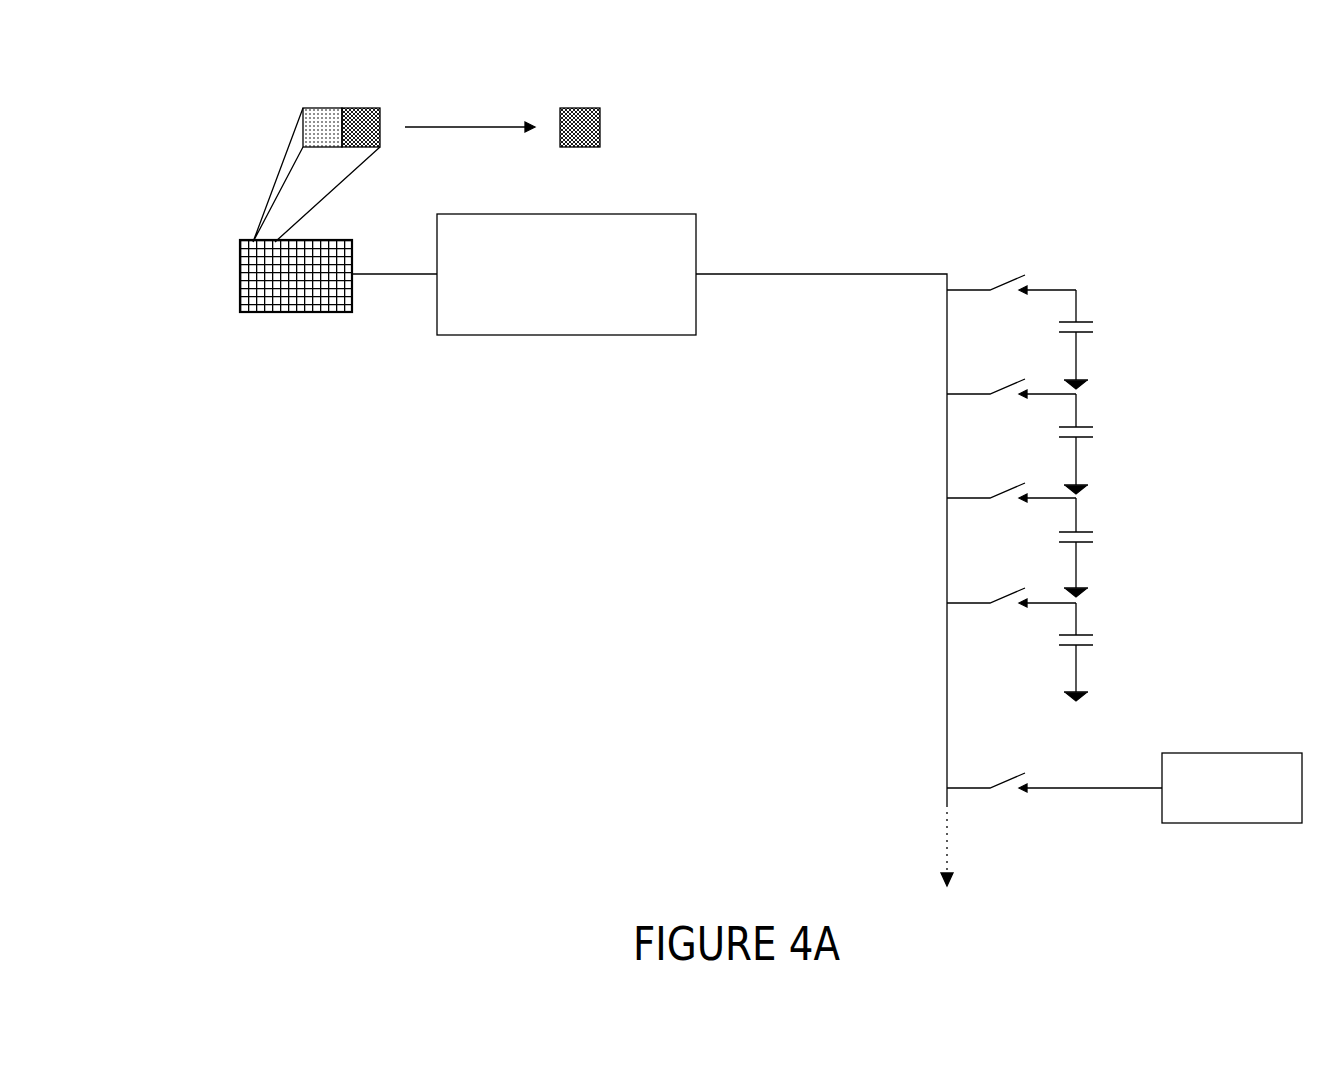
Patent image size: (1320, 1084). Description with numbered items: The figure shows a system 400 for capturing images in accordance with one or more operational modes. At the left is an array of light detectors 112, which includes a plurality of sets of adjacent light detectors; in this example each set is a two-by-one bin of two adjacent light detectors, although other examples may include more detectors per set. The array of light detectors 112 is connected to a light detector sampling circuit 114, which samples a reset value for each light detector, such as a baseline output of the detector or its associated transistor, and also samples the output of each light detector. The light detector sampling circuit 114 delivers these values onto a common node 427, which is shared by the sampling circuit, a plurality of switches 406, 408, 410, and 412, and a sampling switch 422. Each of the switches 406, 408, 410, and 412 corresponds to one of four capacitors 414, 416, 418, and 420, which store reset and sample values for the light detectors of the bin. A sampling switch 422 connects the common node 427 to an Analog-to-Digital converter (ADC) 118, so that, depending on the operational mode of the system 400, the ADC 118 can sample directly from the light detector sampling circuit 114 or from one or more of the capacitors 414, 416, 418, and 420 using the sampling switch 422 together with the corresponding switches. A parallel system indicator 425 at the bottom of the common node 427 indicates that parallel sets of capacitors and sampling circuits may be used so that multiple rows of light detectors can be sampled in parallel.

The system 400 is at (240, 88).
The array of light detectors 112 is at (267, 312).
The light detector sampling circuit 114 is at (680, 314).
The Analog-to-Digital converter (ADC) 118 is at (1291, 817).
The switch 406 is at (988, 288).
The switch 408 is at (990, 392).
The switch 410 is at (990, 496).
The switch 412 is at (990, 600).
The capacitor 414 is at (1077, 343).
The capacitor 416 is at (1077, 449).
The capacitor 418 is at (1077, 554).
The capacitor 420 is at (1077, 657).
The sampling switch 422 is at (978, 787).
The parallel system indicator 425 is at (946, 843).
The common node 427 is at (920, 272).